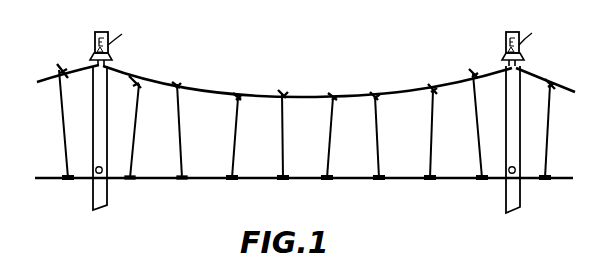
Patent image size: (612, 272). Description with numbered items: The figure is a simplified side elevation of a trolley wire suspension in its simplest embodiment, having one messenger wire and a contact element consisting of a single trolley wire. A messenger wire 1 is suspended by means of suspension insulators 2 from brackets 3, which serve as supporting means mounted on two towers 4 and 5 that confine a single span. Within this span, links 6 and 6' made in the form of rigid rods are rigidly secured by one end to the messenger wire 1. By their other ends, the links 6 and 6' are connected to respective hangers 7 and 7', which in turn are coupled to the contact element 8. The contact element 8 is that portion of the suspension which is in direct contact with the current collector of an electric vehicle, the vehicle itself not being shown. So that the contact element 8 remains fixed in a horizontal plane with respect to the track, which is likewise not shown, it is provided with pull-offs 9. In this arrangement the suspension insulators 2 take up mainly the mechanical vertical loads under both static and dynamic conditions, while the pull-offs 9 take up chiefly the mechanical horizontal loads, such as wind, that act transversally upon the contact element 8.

The messenger wire 1 is at (210, 90).
The suspension insulator 2 is at (93, 53).
The bracket 3 is at (505, 51).
The tower 4 is at (121, 29).
The tower 5 is at (531, 28).
The link 6 is at (128, 93).
The link 6' is at (193, 69).
The hanger 7 is at (143, 131).
The hanger 7' is at (195, 131).
The contact element 8 is at (312, 178).
The pull-off 9 is at (104, 176).